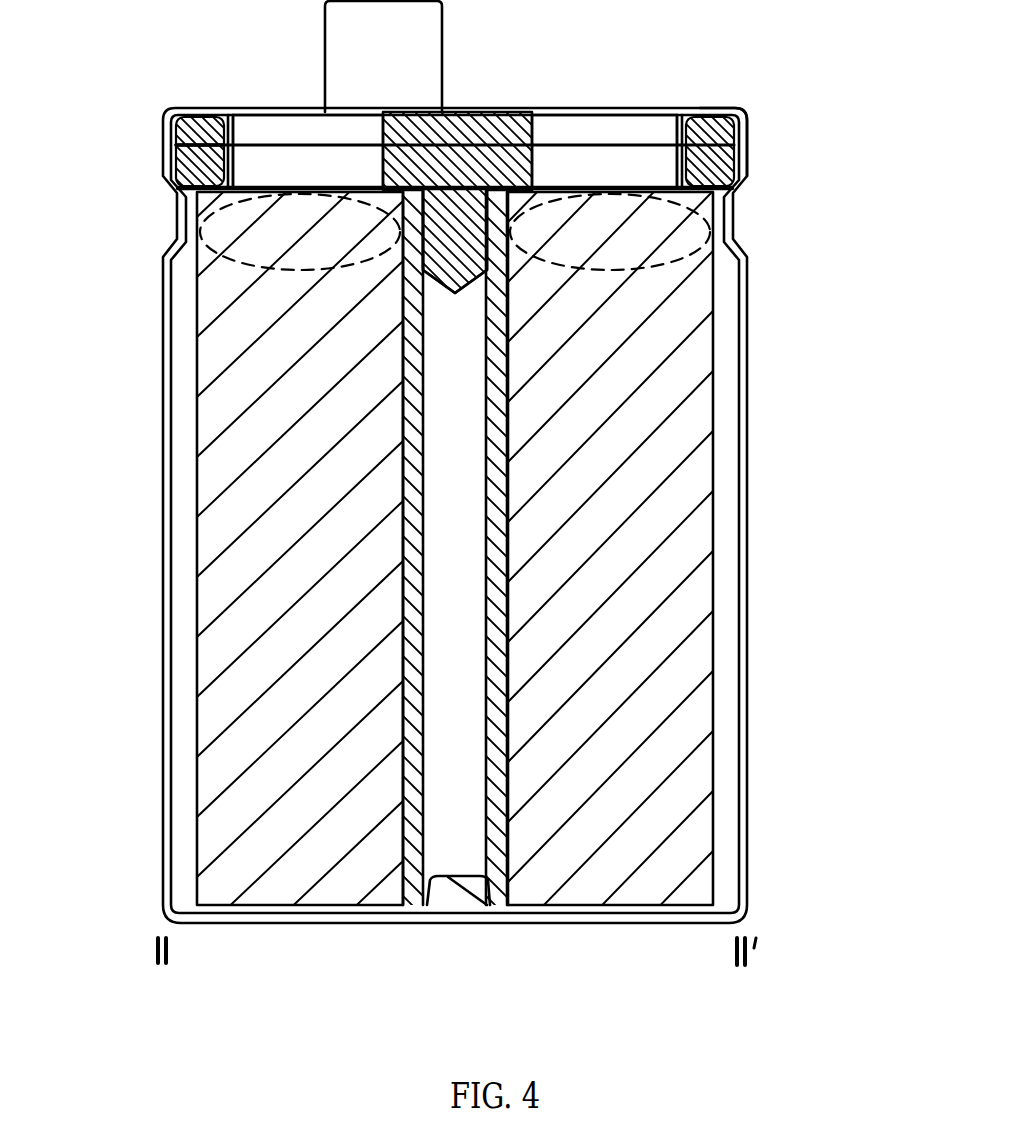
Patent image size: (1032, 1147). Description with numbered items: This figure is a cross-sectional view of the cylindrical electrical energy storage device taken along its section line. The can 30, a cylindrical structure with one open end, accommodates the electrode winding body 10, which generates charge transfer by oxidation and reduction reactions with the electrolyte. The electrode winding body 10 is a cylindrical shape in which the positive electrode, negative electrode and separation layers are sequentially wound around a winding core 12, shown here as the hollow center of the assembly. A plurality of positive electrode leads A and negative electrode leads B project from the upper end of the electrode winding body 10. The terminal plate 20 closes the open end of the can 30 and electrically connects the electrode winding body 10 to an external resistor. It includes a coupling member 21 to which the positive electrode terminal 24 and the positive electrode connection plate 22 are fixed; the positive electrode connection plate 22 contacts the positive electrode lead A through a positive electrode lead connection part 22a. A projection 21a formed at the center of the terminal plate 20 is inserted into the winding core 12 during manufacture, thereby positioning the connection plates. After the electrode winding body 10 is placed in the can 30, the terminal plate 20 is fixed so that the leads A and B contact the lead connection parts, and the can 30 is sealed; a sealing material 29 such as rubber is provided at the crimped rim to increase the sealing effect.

The electrode winding body 10 is at (370, 548).
The winding core 12 is at (420, 776).
The terminal plate 20 is at (744, 108).
The coupling member 21 is at (630, 155).
The projection 21a is at (458, 298).
The positive electrode connection plate 22 is at (752, 172).
The positive electrode lead connection part 22a is at (280, 178).
The positive electrode terminal 24 is at (425, 45).
The sealing material 29 is at (750, 124).
The can 30 is at (748, 281).
The positive electrode lead A is at (180, 262).
The negative electrode lead B is at (745, 258).